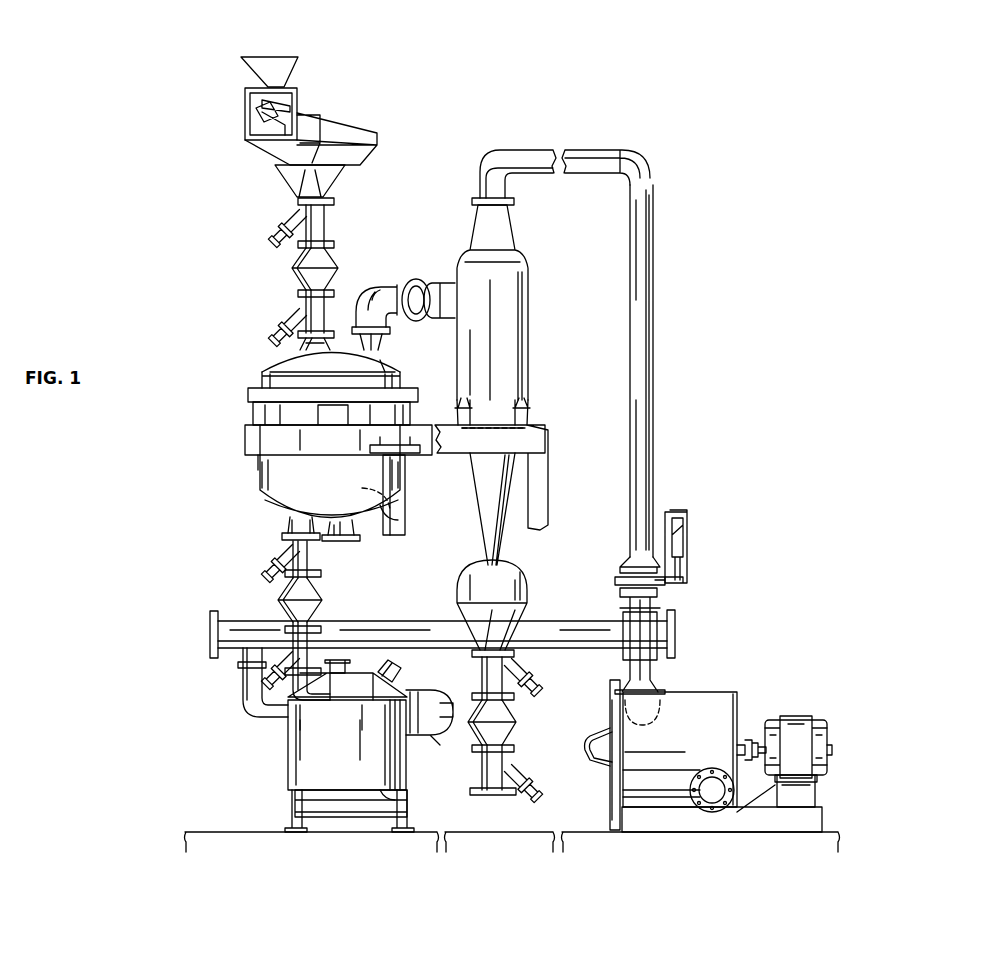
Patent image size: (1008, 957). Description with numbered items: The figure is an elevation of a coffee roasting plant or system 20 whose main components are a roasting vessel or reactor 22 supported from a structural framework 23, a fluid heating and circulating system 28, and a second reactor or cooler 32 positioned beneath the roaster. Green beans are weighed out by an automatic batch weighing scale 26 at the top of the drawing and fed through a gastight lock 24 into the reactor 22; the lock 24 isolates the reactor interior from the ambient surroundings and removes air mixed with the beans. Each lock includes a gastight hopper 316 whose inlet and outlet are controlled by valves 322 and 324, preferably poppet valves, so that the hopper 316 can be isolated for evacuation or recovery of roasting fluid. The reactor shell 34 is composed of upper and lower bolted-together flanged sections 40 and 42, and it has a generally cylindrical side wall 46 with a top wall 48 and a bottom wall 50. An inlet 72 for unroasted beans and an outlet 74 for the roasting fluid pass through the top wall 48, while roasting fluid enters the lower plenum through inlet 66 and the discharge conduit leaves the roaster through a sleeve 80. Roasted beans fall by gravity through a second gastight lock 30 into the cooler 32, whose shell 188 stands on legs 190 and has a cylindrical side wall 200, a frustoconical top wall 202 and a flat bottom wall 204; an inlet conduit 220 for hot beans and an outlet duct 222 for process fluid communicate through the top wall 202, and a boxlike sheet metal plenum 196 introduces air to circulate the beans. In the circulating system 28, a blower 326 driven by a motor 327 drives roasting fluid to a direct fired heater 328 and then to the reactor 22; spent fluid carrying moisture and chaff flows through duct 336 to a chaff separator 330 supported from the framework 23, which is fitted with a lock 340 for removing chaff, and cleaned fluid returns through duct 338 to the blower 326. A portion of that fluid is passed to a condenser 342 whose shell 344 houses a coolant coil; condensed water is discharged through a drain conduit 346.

The coffee roasting plant or system 20 is at (385, 68).
The roasting vessel or reactor 22 is at (233, 383).
The structural framework 23 is at (482, 438).
The gastight lock 24 is at (336, 255).
The automatic batch weighing scale 26 is at (298, 80).
The fluid heating and circulating system 28 is at (676, 362).
The second gastight lock 30 is at (324, 597).
The second reactor or cooler 32 is at (328, 754).
The reactor shell 34 is at (268, 482).
The upper flanged shell section 40 is at (390, 370).
The lower flanged shell section 42 is at (405, 480).
The cylindrical side wall 46 is at (262, 462).
The top wall 48 is at (285, 371).
The bottom wall 50 is at (360, 518).
The inlet 66 is at (336, 537).
The inlet for green beans 72 is at (300, 343).
The outlet for roasting fluid 74 is at (385, 341).
The sleeve 80 is at (295, 521).
The cooler shell 188 is at (368, 757).
The legs 190 is at (395, 825).
The sheet metal plenum 196 is at (325, 808).
The cylindrical side wall 200 is at (285, 766).
The frustoconical top wall 202 is at (360, 673).
The flat bottom wall 204 is at (392, 797).
The inlet conduit 220 is at (292, 700).
The outlet duct 222 is at (392, 672).
The gastight hopper 316 is at (300, 270).
The inlet valve 322 is at (300, 212).
The outlet valve 324 is at (300, 312).
The blower 326 is at (705, 692).
The motor 327 is at (797, 718).
The direct fired heater 328 is at (570, 0).
The chaff separator 330 is at (527, 310).
The duct 336 is at (414, 294).
The duct 338 is at (656, 205).
The lock 340 is at (503, 704).
The condenser 342 is at (560, 615).
The condenser shell 344 is at (443, 620).
The drain conduit 346 is at (250, 685).